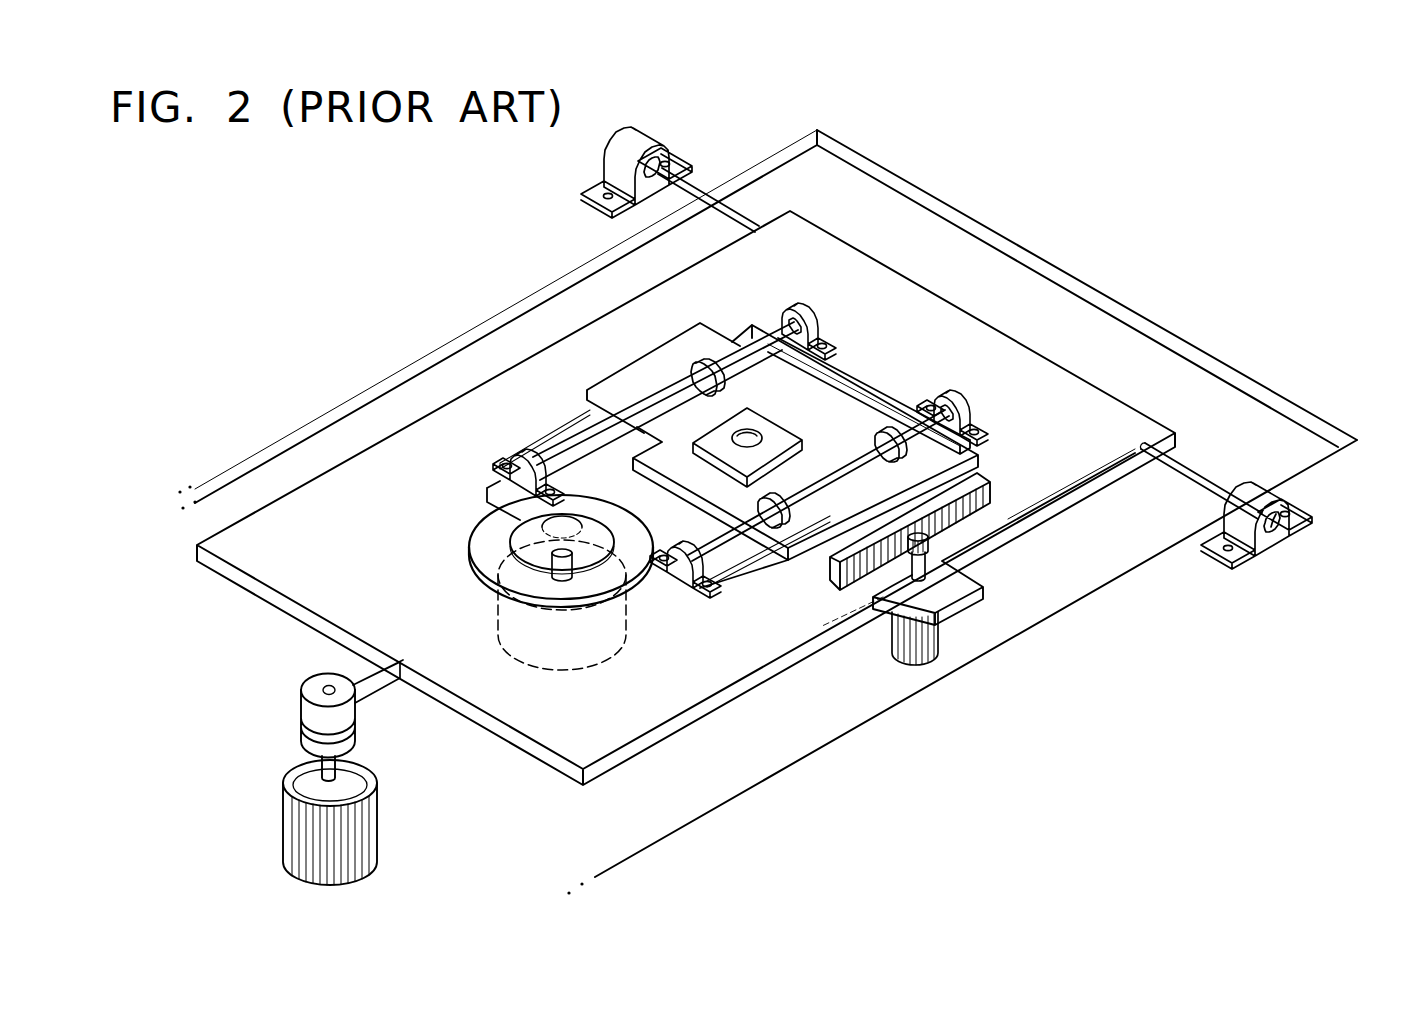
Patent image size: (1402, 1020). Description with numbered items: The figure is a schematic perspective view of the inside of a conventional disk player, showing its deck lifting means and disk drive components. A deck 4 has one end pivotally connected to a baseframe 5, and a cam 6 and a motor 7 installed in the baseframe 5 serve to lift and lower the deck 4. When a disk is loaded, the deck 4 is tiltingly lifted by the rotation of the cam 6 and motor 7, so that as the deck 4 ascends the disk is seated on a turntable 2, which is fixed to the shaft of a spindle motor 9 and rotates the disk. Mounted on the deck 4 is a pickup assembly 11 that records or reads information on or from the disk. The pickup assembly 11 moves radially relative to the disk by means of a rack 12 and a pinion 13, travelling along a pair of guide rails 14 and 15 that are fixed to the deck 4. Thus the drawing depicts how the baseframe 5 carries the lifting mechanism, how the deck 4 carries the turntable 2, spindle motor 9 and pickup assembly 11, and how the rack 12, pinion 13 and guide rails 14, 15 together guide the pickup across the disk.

The turntable 2 is at (487, 537).
The deck 4 is at (573, 737).
The baseframe 5 is at (1088, 268).
The cam 6 is at (300, 695).
The motor 7 is at (285, 820).
The spindle motor 9 is at (532, 643).
The pickup assembly 11 is at (835, 422).
The rack 12 is at (977, 480).
The pinion 13 is at (937, 548).
The guide rail 14 is at (936, 408).
The guide rail 15 is at (782, 331).